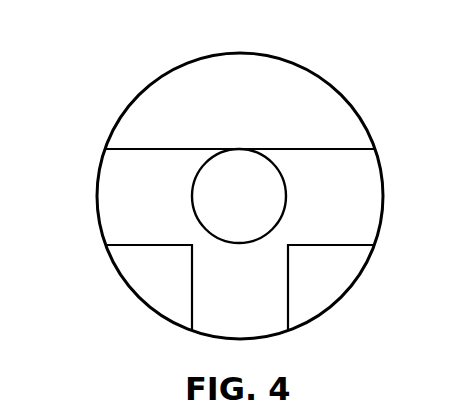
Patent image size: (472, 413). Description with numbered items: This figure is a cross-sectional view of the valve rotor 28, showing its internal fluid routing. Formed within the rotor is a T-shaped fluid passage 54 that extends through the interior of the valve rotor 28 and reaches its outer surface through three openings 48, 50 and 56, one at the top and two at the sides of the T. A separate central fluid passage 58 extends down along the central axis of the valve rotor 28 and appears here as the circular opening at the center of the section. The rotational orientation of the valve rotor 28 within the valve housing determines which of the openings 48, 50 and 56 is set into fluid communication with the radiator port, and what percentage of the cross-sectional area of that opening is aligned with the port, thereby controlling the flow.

The valve rotor 28 is at (330, 70).
The opening 48 is at (98, 200).
The opening 50 is at (268, 338).
The T-shaped fluid passage 54 is at (327, 149).
The opening 56 is at (383, 200).
The central fluid passage 58 is at (287, 192).